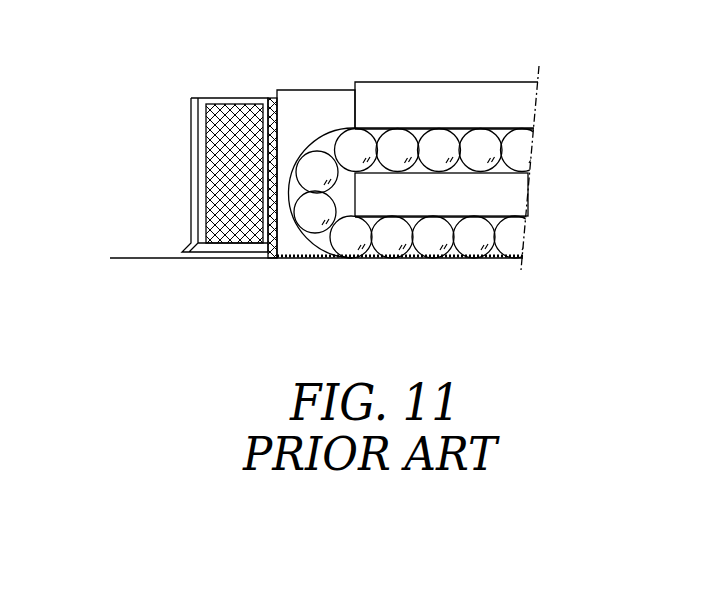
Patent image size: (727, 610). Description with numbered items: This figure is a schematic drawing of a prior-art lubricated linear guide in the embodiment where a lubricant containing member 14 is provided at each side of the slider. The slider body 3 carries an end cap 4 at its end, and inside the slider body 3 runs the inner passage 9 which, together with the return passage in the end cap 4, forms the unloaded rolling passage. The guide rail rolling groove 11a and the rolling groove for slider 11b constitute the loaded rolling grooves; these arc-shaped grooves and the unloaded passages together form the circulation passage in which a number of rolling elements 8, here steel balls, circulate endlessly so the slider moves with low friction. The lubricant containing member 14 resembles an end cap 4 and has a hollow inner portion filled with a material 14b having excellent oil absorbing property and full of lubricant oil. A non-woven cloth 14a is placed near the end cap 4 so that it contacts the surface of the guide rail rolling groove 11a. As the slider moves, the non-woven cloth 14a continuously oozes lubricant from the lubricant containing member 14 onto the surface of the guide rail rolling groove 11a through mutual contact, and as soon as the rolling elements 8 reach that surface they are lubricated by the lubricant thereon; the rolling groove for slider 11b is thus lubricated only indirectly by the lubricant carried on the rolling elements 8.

The slider body 3 is at (428, 105).
The end cap 4 is at (323, 107).
The rolling elements 8 is at (478, 145).
The inner passage 9 is at (507, 128).
The guide rail rolling groove 11a is at (422, 257).
The rolling groove for slider 11b is at (468, 217).
The lubricant containing member 14 is at (205, 103).
The non-woven cloth 14a is at (272, 260).
The oil absorbing material 14b is at (207, 155).